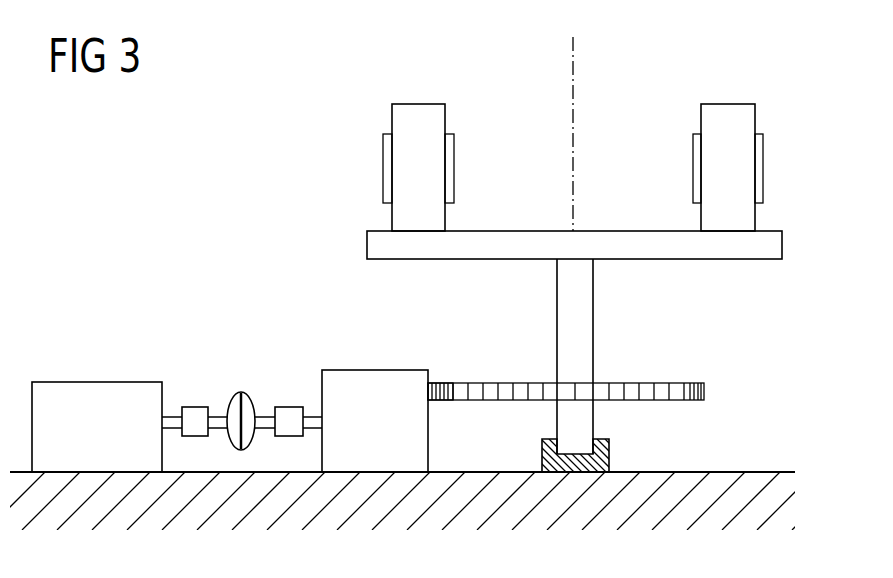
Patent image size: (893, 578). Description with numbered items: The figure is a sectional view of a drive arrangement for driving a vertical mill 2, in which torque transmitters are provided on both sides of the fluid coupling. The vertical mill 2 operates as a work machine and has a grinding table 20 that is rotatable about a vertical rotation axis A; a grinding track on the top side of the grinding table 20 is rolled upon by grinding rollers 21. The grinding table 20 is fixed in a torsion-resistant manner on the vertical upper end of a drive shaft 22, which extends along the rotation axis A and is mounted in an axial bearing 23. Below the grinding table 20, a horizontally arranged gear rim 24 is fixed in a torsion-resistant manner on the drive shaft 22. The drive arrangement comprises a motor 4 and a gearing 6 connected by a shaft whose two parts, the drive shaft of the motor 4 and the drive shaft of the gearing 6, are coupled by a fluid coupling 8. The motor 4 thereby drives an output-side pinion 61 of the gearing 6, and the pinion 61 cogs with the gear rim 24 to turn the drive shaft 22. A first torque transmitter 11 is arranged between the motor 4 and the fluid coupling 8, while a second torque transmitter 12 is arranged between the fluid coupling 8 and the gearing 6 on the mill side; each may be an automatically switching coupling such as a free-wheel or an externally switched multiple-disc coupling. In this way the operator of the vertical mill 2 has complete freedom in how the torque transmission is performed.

The vertical mill 2 is at (290, 132).
The motor 4 is at (98, 397).
The gearing 6 is at (362, 383).
The fluid coupling 8 is at (245, 400).
The first torque transmitter 11 is at (188, 418).
The torque transmitter 12 is at (288, 417).
The grinding table 20 is at (522, 247).
The grinding rollers 21 is at (417, 120).
The drive shaft 22 is at (594, 325).
The axial bearing 23 is at (610, 455).
The gear rim 24 is at (506, 390).
The pinion 61 is at (434, 382).
The rotation axis A is at (574, 60).